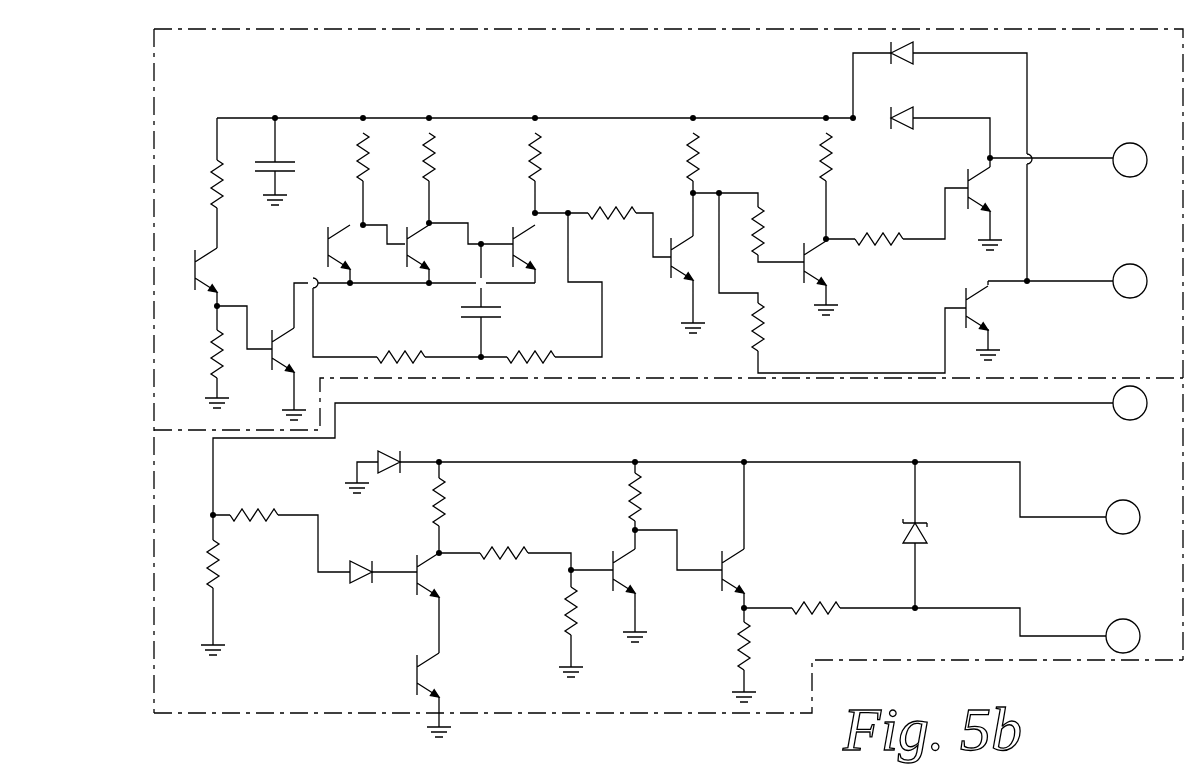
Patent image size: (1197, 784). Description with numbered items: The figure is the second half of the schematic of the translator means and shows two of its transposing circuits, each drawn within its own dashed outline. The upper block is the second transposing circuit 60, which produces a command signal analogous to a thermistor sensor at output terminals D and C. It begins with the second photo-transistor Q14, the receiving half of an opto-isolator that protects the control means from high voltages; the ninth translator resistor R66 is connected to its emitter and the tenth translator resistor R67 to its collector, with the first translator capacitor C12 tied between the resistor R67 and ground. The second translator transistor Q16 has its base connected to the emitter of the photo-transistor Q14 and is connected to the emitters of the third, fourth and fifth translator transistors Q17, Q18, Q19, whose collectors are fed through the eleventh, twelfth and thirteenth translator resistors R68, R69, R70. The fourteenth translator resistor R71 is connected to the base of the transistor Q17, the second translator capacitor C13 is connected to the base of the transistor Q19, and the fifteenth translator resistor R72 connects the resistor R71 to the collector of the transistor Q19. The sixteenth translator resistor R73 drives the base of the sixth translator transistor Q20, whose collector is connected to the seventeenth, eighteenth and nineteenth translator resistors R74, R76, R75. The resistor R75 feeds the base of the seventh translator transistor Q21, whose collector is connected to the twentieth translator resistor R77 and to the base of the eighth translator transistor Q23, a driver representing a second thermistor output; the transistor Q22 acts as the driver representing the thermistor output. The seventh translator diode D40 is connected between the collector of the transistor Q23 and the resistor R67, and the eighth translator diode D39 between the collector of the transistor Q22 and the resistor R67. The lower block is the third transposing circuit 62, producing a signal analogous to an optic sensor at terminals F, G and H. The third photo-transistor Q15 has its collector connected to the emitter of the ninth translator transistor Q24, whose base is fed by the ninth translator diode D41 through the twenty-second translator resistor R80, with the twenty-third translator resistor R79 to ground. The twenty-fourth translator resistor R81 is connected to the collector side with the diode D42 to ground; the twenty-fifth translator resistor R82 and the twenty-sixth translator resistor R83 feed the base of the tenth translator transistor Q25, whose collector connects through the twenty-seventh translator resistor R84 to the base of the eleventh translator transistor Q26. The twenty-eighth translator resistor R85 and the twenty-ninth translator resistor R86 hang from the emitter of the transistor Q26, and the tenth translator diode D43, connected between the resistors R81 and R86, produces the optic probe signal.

The second transposing circuit 60 is at (488, 30).
The third transposing circuit 62 is at (690, 713).
The ninth translator resistor R66 is at (191, 354).
The tenth translator resistor R67 is at (234, 184).
The eleventh translator resistor R68 is at (380, 156).
The twelfth translator resistor R69 is at (446, 156).
The thirteenth translator resistor R70 is at (552, 156).
The fourteenth translator resistor R71 is at (401, 346).
The fifteenth translator resistor R72 is at (531, 346).
The sixteenth translator resistor R73 is at (612, 200).
The seventeenth translator resistor R74 is at (711, 156).
The nineteenth translator resistor R75 is at (775, 229).
The eighteenth translator resistor R76 is at (775, 327).
The twentieth translator resistor R77 is at (845, 156).
The twenty-third translator resistor R79 is at (232, 564).
The twenty-second translator resistor R80 is at (254, 505).
The twenty-fourth translator resistor R81 is at (459, 502).
The twenty-fifth translator resistor R82 is at (504, 542).
The twenty-sixth translator resistor R83 is at (544, 603).
The twenty-seventh translator resistor R84 is at (654, 497).
The twenty-eighth translator resistor R85 is at (761, 646).
The twenty-ninth translator resistor R86 is at (816, 598).
The first translator capacitor C12 is at (285, 155).
The second translator capacitor C13 is at (499, 305).
The eighth translator diode D39 is at (922, 61).
The seventh translator diode D40 is at (922, 111).
The ninth translator diode D41 is at (370, 561).
The translator diode D42 is at (392, 450).
The tenth translator diode D43 is at (932, 528).
The second photo-transistor Q14 is at (216, 270).
The third photo-transistor Q15 is at (436, 675).
The second translator transistor Q16 is at (268, 351).
The third translator transistor Q17 is at (348, 247).
The fourth translator transistor Q18 is at (427, 247).
The fifth translator transistor Q19 is at (533, 247).
The sixth translator transistor Q20 is at (691, 258).
The seventh translator transistor Q21 is at (823, 263).
The seventh translator transistor Q22 is at (986, 308).
The eighth translator transistor Q23 is at (988, 189).
The ninth translator transistor Q24 is at (436, 575).
The tenth translator transistor Q25 is at (634, 571).
The eleventh translator transistor Q26 is at (742, 571).
The second command signal terminal D is at (1130, 160).
The second command signal terminal C is at (1130, 281).
The third command signal terminal F is at (1130, 403).
The third command signal terminal G is at (1123, 517).
The third command signal terminal H is at (1123, 636).